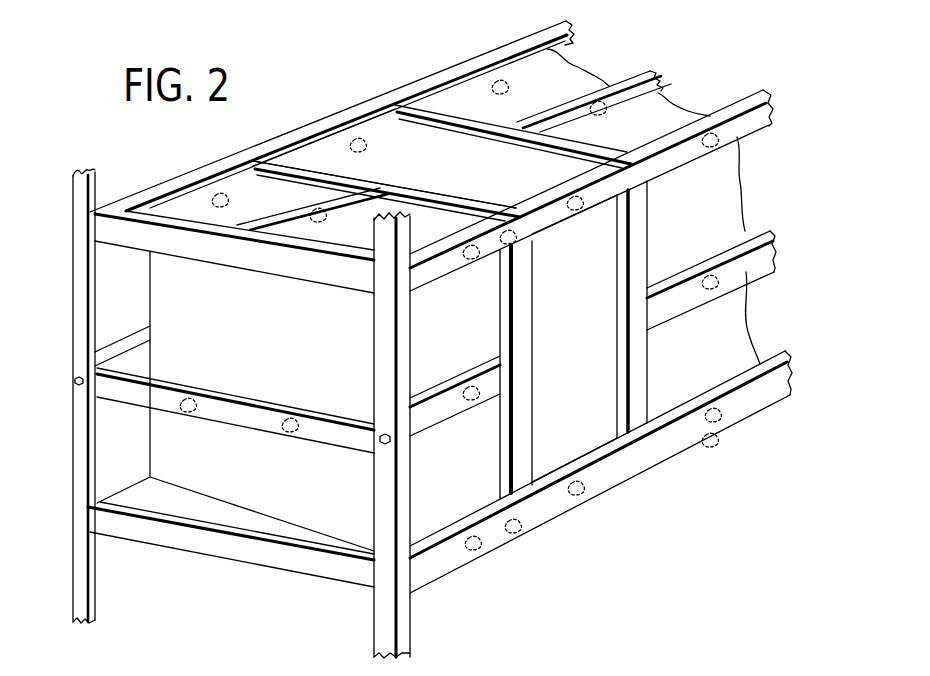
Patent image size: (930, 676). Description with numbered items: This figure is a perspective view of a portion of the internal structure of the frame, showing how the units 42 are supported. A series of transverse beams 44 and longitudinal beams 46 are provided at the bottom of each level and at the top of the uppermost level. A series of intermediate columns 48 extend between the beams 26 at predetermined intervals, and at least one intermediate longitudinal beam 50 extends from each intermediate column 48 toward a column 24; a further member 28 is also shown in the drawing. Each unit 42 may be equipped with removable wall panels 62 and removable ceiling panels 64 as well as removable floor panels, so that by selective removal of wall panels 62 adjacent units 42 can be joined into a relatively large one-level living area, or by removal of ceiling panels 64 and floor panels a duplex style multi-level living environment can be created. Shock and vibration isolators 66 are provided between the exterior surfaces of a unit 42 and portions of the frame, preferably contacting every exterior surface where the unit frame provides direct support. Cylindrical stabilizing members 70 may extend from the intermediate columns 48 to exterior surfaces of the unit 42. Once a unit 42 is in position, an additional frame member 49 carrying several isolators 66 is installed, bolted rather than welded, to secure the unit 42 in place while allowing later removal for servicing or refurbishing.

The column 24 is at (76, 187).
The beam 26 is at (170, 182).
The side shelf rail 28 is at (141, 339).
The unit 42 is at (277, 510).
The transverse beam 44 is at (402, 106).
The longitudinal beam 46 is at (283, 214).
The intermediate column 48 is at (503, 442).
The additional frame member 49 is at (252, 410).
The intermediate longitudinal beam 50 is at (497, 373).
The removable wall panel 62 is at (593, 357).
The removable ceiling panel 64 is at (467, 169).
The shock and vibration isolator 66 is at (715, 445).
The stabilizing member 70 is at (527, 532).